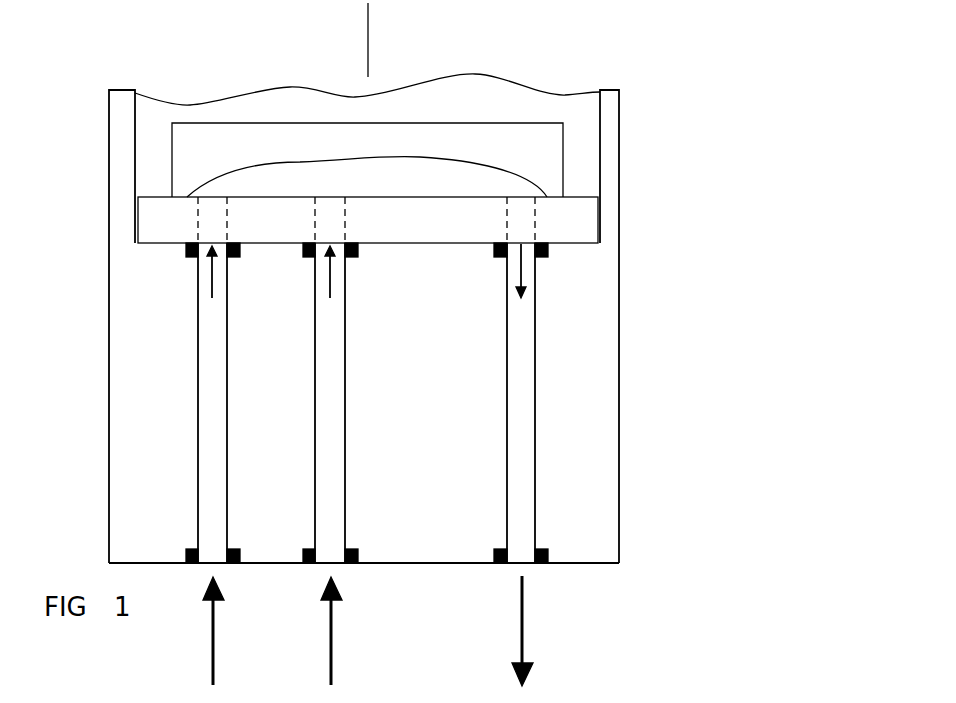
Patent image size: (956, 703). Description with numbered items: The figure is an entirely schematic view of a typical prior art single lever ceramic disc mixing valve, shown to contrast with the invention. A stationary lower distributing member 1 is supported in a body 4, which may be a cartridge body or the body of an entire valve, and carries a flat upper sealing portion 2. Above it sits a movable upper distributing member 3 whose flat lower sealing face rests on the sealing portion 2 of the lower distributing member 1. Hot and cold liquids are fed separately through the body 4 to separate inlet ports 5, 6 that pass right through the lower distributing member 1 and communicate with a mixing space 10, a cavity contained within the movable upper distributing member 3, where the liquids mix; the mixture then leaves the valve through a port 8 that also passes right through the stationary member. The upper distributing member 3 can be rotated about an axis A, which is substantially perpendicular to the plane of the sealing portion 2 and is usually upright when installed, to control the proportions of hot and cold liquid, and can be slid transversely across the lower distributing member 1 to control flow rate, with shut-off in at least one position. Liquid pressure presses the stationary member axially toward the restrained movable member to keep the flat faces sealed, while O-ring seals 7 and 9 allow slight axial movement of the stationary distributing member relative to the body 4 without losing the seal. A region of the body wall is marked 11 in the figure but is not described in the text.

The stationary lower distributing member 1 is at (612, 203).
The flat upper sealing portion 2 is at (578, 197).
The movable upper distributing member 3 is at (464, 110).
The body 4 is at (633, 328).
The inlet port 5 is at (213, 218).
The inlet port 6 is at (330, 220).
The O-ring seal 7 is at (193, 256).
The port 8 is at (519, 222).
The O-ring seal 9 is at (345, 258).
The mixing space 10 is at (437, 183).
The wall portion 11 is at (570, 288).
The axis A is at (372, 31).